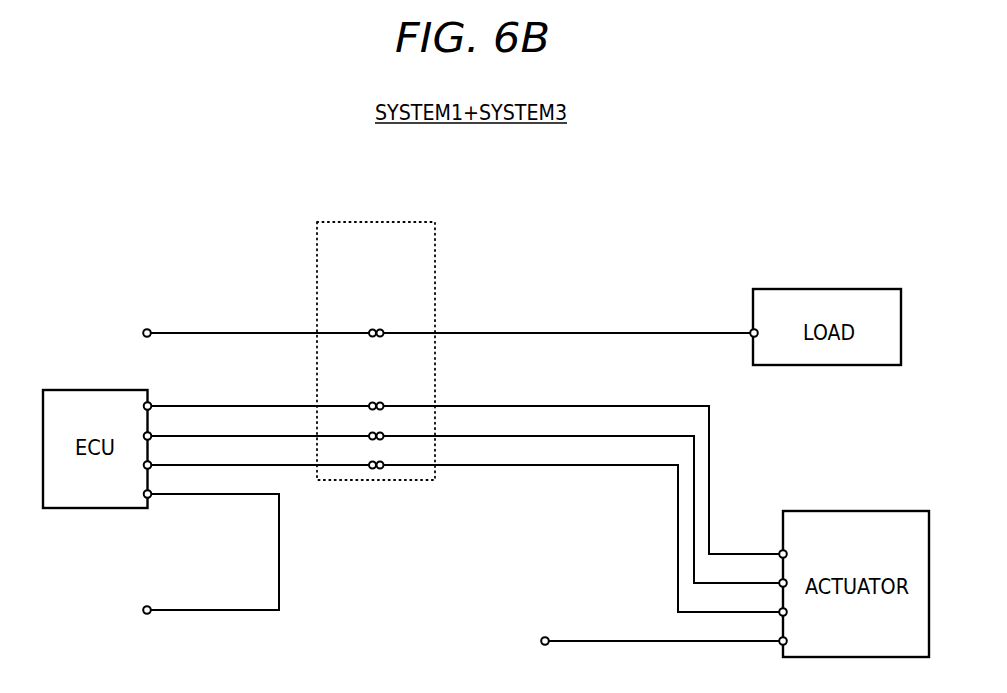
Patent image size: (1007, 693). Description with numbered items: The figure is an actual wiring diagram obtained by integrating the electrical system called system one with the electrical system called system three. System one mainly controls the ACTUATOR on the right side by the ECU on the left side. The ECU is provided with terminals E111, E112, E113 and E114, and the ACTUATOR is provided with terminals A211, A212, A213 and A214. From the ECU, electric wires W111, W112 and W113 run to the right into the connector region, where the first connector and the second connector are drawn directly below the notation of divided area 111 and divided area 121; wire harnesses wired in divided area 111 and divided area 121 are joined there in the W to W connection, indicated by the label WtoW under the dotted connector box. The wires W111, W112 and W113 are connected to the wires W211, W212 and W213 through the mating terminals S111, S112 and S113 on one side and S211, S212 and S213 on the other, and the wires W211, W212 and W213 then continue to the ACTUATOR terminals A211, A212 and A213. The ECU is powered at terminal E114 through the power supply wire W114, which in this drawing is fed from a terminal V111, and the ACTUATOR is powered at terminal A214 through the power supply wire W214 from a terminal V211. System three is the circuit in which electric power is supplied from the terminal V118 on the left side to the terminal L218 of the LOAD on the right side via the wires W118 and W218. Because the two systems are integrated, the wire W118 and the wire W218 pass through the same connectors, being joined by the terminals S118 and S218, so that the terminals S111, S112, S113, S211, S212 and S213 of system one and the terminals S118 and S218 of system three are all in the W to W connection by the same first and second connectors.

The terminal V118 is at (170, 323).
The wire W118 is at (259, 322).
The terminal S118 is at (349, 323).
The terminal S218 is at (404, 323).
The wire W218 is at (566, 322).
The terminal L218 is at (732, 323).
The terminal E111 is at (168, 396).
The electric wire W111 is at (260, 395).
The terminal S111 is at (349, 396).
The terminal S211 is at (404, 396).
The electric wire W211 is at (581, 468).
The terminal A211 is at (759, 544).
The terminal E112 is at (168, 426).
The electric wire W112 is at (260, 425).
The terminal S112 is at (349, 426).
The terminal S212 is at (404, 426).
The electric wire W212 is at (581, 498).
The terminal A212 is at (759, 573).
The terminal E113 is at (168, 455).
The electric wire W113 is at (260, 454).
The terminal S113 is at (349, 455).
The terminal S213 is at (404, 455).
The electric wire W213 is at (581, 527).
The terminal A213 is at (759, 602).
The terminal E114 is at (168, 484).
The power supply wire W114 is at (241, 552).
The voltage terminal V111 is at (169, 600).
The voltage terminal V211 is at (567, 631).
The power supply wire W214 is at (664, 630).
The terminal A214 is at (759, 631).
The W to W connection WtoW is at (407, 480).
The divided area 111 is at (380, 316).
The divided area 121 is at (376, 351).